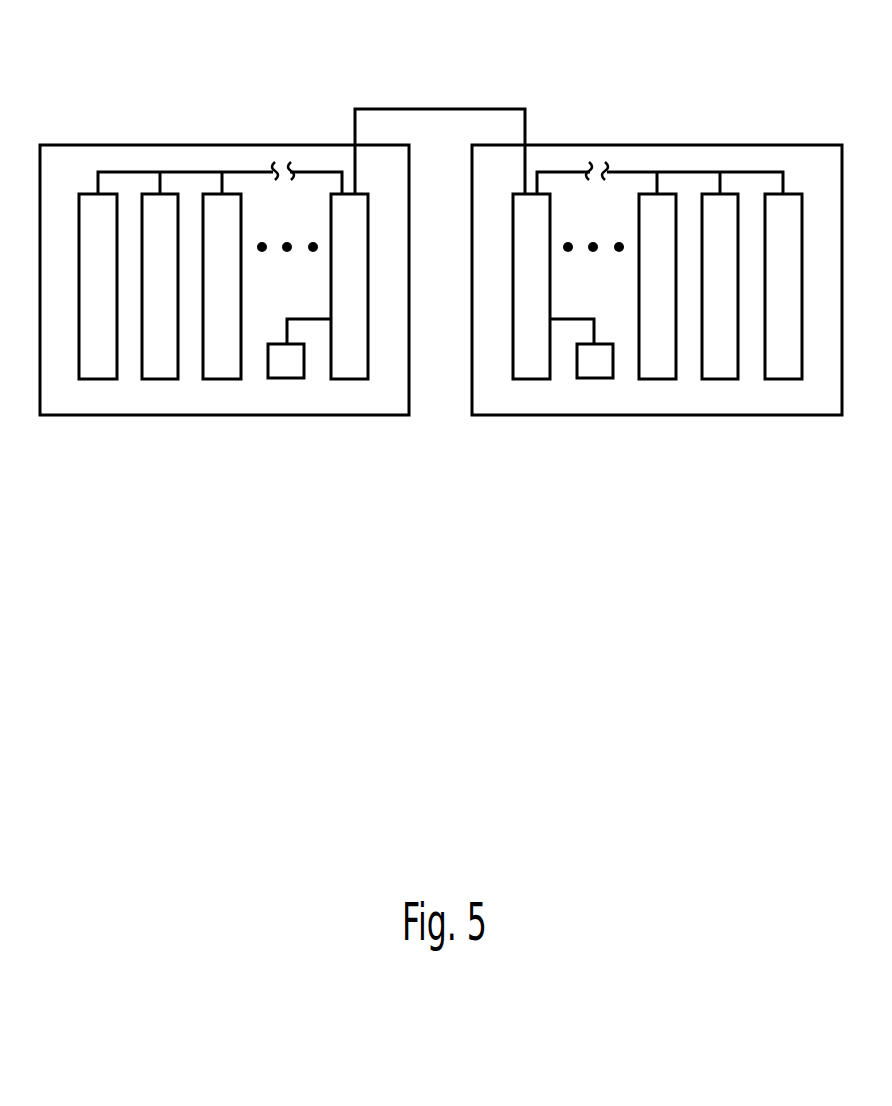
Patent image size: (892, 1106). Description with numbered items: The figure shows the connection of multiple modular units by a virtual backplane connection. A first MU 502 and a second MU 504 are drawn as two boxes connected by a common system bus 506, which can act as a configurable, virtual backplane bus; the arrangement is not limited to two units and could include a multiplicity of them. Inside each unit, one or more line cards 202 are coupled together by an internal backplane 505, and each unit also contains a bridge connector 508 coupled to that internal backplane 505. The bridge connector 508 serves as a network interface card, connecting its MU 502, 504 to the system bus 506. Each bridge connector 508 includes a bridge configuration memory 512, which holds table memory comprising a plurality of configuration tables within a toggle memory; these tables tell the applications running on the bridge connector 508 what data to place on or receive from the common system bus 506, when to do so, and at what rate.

The line card 202 is at (107, 379).
The first MU 502 is at (88, 145).
The second MU 504 is at (780, 145).
The internal backplane 505 is at (252, 172).
The common system bus 506 is at (432, 109).
The bridge connector 508 is at (344, 379).
The bridge configuration memory 512 is at (280, 379).